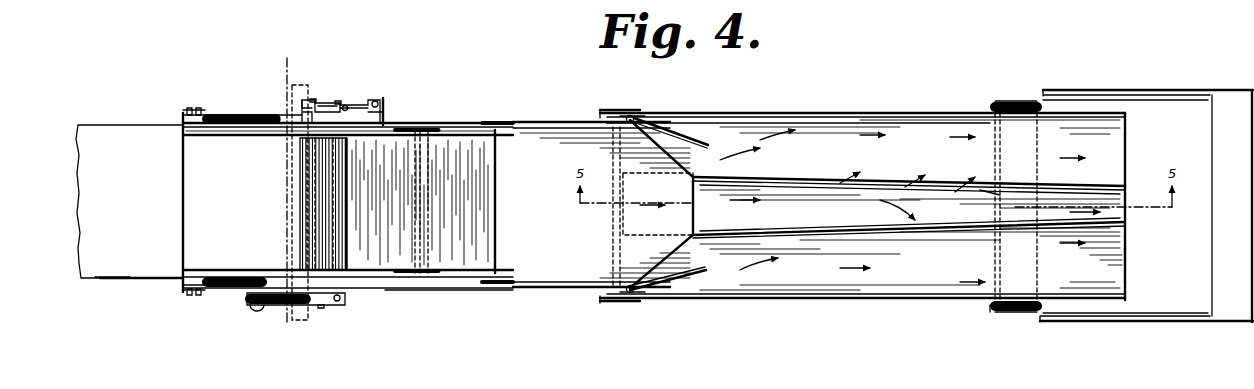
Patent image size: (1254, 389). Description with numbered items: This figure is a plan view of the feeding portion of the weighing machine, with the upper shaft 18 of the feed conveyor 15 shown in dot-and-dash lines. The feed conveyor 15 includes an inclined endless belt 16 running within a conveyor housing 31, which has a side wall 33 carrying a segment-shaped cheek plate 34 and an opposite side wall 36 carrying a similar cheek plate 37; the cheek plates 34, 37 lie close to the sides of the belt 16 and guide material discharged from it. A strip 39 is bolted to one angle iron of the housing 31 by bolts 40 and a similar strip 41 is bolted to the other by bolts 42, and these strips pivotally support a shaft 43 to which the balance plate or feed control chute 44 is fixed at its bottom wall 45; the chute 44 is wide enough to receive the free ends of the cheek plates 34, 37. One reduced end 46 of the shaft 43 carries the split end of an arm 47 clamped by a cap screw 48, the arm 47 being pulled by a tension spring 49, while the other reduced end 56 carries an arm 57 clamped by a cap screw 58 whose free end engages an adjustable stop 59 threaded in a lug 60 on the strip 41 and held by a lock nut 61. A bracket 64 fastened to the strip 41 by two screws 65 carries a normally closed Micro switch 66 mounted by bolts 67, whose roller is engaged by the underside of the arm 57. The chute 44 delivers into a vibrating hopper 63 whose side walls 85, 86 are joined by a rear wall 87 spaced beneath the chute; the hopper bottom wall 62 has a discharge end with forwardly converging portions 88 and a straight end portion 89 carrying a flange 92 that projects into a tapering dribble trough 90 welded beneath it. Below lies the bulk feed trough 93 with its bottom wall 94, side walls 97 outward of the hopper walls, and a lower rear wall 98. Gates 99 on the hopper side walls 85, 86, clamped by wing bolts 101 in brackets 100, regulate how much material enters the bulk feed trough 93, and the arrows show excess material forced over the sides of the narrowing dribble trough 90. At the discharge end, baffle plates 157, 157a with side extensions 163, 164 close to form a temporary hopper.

The feed conveyor 15 is at (116, 278).
The endless belt 16 is at (345, 238).
The shaft 18 is at (297, 182).
The housing 31 is at (92, 128).
The side wall 33 is at (221, 289).
The cheek plate 34 is at (432, 270).
The side wall 36 is at (230, 123).
The cheek plate 37 is at (440, 132).
The strip 39 is at (183, 286).
The bolts 40 is at (198, 296).
The strip 41 is at (183, 115).
The bolts 42 is at (199, 107).
The shaft 43 is at (350, 190).
The feed control chute 44 is at (400, 291).
The bottom wall 45 is at (496, 262).
The reduced end 46 is at (321, 308).
The arm 47 is at (275, 306).
The cap screw 48 is at (338, 302).
The tension spring 49 is at (255, 310).
The reduced end 56 is at (326, 101).
The arm 57 is at (362, 106).
The cap screw 58 is at (346, 106).
The adjustable stop 59 is at (385, 110).
The lug 60 is at (384, 118).
The lock nut 61 is at (378, 104).
The bottom wall 62 is at (575, 273).
The hopper 63 is at (566, 124).
The bracket 64 is at (303, 110).
The screws 65 is at (304, 103).
The Micro switch 66 is at (352, 107).
The bolts 67 is at (313, 99).
The side wall 85 is at (513, 121).
The side wall 86 is at (498, 289).
The rear wall 87 is at (420, 155).
The converging portions 88 is at (665, 150).
The straight end portion 89 is at (696, 222).
The dribble trough 90 is at (921, 181).
The flange 92 is at (658, 204).
The bulk feed trough 93 is at (820, 128).
The bottom wall 94 is at (1122, 264).
The side walls 97 is at (946, 112).
The rear wall 98 is at (618, 248).
The gates 99 is at (700, 137).
The bracket 100 is at (616, 112).
The wing bolt 101 is at (634, 117).
The baffle plate 157 is at (1215, 231).
The baffle plate 157a is at (993, 306).
The side extensions 163 is at (1205, 89).
The side extensions 164 is at (1153, 101).